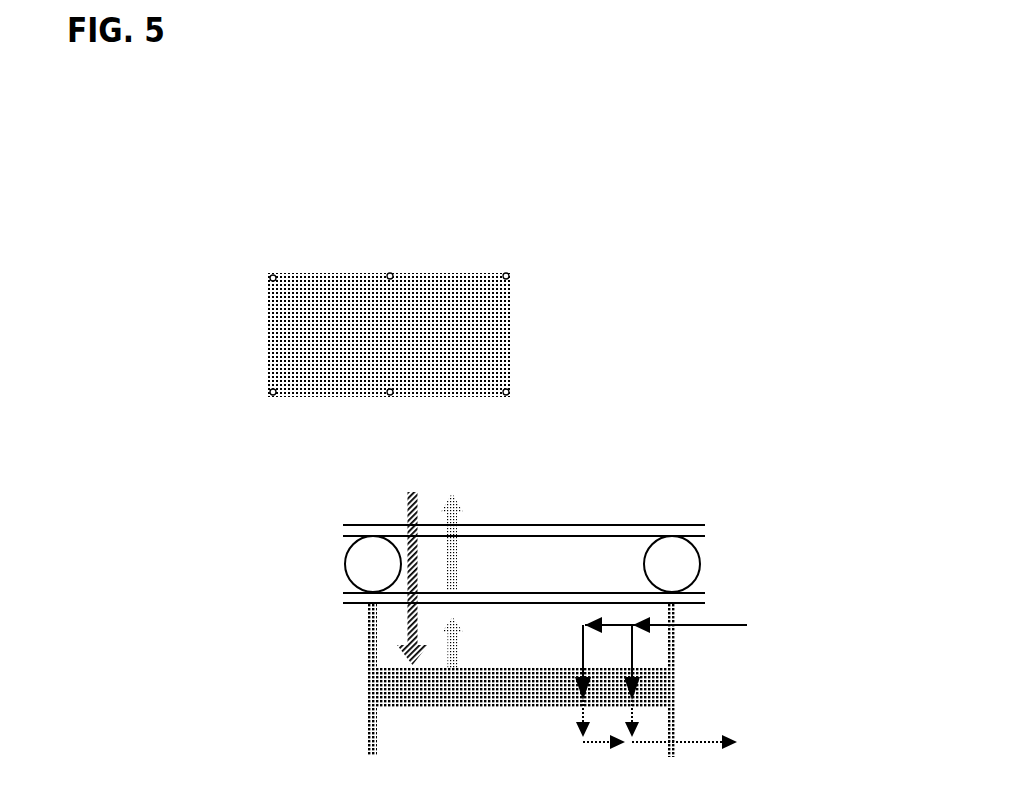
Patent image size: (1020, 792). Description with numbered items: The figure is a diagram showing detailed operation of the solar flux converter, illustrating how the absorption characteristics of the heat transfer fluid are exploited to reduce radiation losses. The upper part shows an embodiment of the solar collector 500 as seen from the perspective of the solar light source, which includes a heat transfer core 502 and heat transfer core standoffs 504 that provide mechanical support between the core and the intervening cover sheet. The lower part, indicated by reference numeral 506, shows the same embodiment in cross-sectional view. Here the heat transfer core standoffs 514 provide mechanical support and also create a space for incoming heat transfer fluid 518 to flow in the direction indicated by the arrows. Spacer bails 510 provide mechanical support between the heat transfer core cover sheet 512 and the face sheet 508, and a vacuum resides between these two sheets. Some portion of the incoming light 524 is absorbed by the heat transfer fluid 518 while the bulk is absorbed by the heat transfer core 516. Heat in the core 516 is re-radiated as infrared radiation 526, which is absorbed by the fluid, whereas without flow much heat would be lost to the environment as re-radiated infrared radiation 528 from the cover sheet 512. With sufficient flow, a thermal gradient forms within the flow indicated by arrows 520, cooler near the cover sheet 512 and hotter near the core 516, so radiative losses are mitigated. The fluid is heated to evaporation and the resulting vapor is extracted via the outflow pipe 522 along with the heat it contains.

The solar collector embodiment 500 is at (275, 335).
The heat transfer core 502 is at (290, 345).
The heat transfer core standoffs 504 is at (268, 388).
The solar collector embodiment in cross-sectional view 506 is at (478, 602).
The face sheet 508 is at (722, 530).
The spacer bails 510 is at (716, 564).
The heat transfer core cover sheet 512 is at (323, 600).
The heat transfer core standoffs 514 is at (367, 643).
The heat transfer core 516 is at (367, 688).
The heat transfer fluid 518 is at (758, 625).
The flow arrows 520 is at (642, 650).
The outflow pipe 522 is at (760, 743).
The incoming light 524 is at (400, 512).
The re-radiated infrared radiation 526 is at (468, 642).
The re-radiated infrared radiation 528 is at (470, 490).